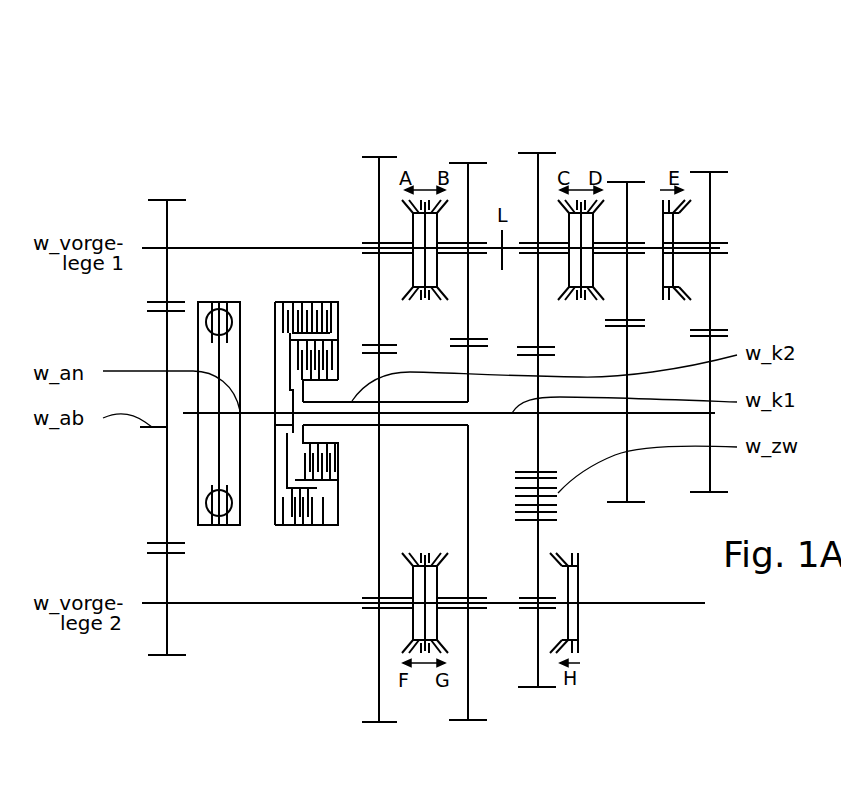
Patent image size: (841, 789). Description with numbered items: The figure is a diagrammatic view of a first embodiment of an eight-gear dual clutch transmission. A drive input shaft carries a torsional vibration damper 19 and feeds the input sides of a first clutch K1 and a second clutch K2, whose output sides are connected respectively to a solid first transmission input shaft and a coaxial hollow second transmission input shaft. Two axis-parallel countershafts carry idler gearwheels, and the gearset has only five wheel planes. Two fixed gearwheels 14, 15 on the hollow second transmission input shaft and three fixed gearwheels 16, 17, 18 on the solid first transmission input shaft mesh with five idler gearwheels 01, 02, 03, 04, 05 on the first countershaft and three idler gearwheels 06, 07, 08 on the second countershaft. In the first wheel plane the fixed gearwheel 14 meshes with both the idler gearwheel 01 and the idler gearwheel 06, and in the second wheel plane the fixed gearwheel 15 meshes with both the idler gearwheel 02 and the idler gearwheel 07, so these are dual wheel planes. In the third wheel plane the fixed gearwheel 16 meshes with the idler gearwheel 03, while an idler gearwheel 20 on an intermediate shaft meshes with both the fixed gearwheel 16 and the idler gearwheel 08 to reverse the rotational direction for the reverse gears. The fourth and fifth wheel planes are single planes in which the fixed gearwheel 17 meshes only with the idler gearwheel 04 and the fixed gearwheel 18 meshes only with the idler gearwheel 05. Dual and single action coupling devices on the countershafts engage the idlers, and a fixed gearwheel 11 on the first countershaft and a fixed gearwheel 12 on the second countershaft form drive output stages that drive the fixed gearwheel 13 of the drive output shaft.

The fixed gearwheel of the first countershaft 11 is at (165, 200).
The fixed gearwheel of the second countershaft 12 is at (163, 658).
The fixed gearwheel of the drive output shaft 13 is at (172, 327).
The fixed gearwheel of the second transmission input shaft 14 is at (375, 364).
The fixed gearwheel of the second transmission input shaft 15 is at (468, 355).
The fixed gearwheel of the first transmission input shaft 16 is at (533, 365).
The fixed gearwheel of the first transmission input shaft 17 is at (627, 338).
The fixed gearwheel of the first transmission input shaft 18 is at (710, 342).
The torsional vibration damper 19 is at (230, 528).
The idler gearwheel 20 is at (558, 507).
The first clutch K1 is at (267, 313).
The second clutch K2 is at (267, 358).
The idler gearwheel of the first countershaft 01 is at (375, 157).
The idler gearwheel of the first countershaft 02 is at (460, 163).
The idler gearwheel of the first countershaft 03 is at (545, 153).
The idler gearwheel of the first countershaft 04 is at (632, 182).
The idler gearwheel of the first countershaft 05 is at (722, 172).
The idler gearwheel of the second countershaft 06 is at (370, 725).
The idler gearwheel of the second countershaft 07 is at (455, 723).
The idler gearwheel of the second countershaft 08 is at (550, 687).